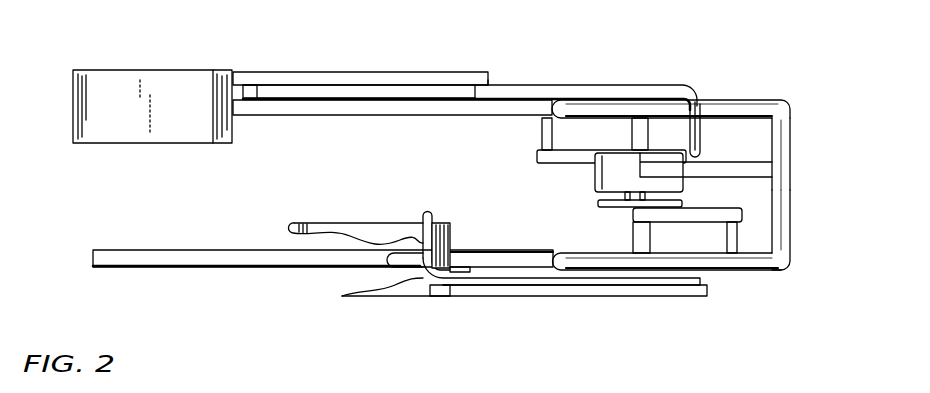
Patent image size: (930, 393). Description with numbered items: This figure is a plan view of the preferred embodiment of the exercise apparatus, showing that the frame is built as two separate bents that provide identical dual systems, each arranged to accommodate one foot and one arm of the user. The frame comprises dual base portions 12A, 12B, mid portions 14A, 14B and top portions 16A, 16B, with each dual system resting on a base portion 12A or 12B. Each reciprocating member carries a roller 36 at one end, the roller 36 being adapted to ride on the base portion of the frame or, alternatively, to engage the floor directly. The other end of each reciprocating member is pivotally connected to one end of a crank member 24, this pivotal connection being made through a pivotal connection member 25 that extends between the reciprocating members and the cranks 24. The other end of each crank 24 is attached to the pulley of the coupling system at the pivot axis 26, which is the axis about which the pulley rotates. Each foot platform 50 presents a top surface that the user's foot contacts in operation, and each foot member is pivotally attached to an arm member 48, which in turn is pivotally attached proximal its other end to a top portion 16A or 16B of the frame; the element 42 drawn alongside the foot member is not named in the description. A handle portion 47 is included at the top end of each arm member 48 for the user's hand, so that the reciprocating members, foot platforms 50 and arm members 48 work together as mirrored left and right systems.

The base portion 12A is at (287, 117).
The base portion 12B is at (187, 267).
The mid portion 14A is at (790, 107).
The mid portion 14B is at (790, 262).
The top portion 16A is at (745, 100).
The top portion 16B is at (747, 270).
The crank member 24 is at (537, 155).
The pivotal connection member 25 is at (542, 130).
The pivot axis 26 is at (600, 185).
The roller 36 is at (377, 262).
The stiffener plate 42 is at (328, 77).
The handle portion 47 is at (698, 100).
The arm member 48 is at (510, 87).
The foot platform 50 is at (142, 143).